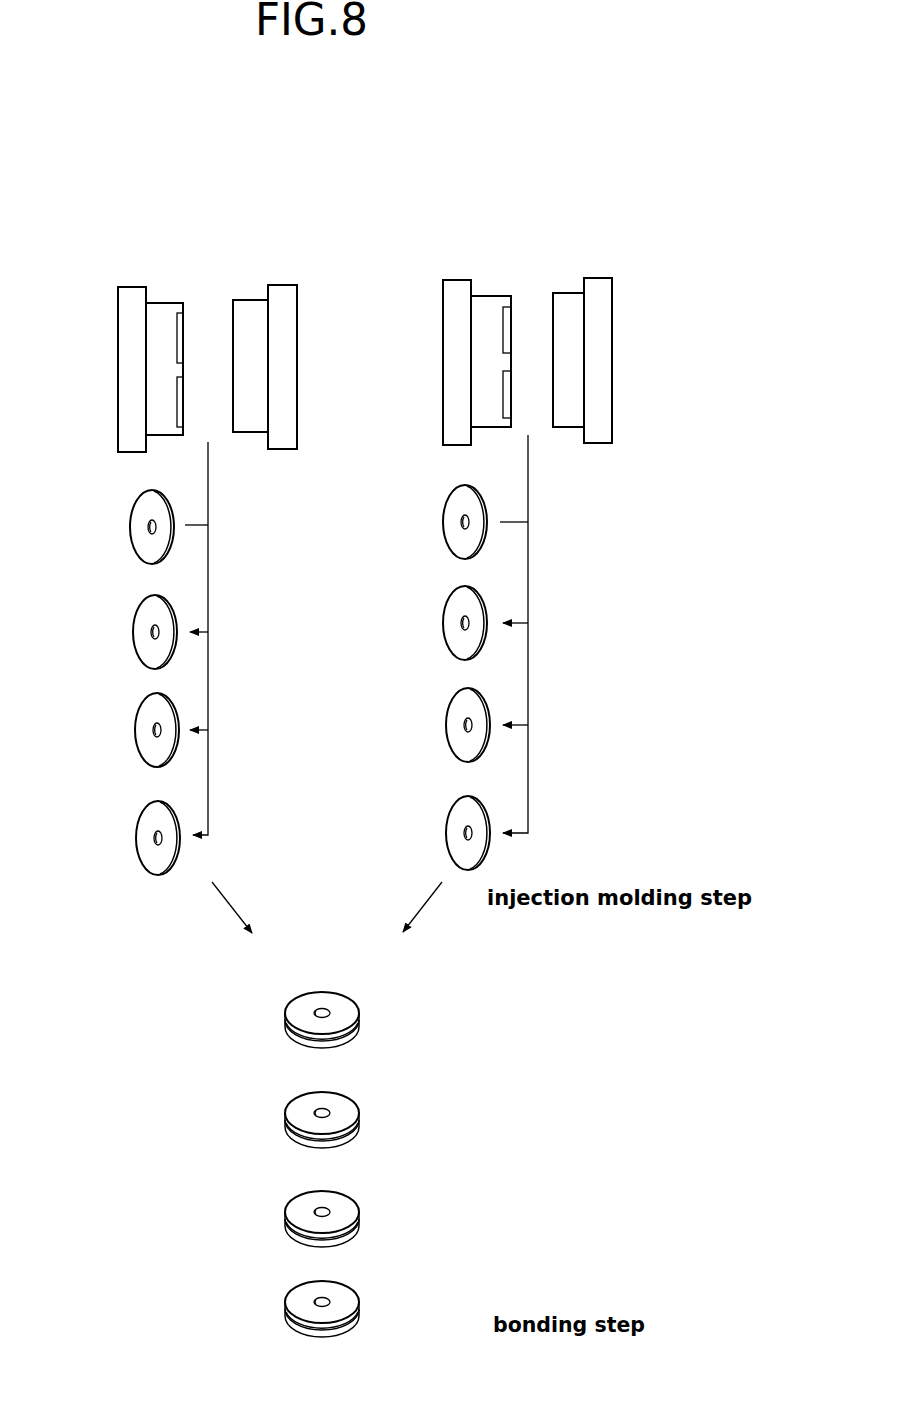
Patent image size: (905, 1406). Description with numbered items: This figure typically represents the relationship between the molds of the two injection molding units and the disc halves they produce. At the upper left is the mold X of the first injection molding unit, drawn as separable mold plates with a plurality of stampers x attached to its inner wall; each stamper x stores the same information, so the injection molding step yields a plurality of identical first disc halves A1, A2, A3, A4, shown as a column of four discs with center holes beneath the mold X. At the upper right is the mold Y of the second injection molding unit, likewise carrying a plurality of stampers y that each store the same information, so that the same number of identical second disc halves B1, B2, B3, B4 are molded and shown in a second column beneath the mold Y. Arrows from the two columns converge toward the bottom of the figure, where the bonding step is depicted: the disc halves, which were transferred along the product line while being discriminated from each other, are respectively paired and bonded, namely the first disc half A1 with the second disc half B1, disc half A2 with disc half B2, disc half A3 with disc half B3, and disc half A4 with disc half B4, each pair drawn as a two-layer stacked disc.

The mold X is at (228, 263).
The stampers x is at (185, 327).
The mold Y is at (570, 255).
The stampers y is at (512, 322).
The first disc half A1 is at (130, 529).
The first disc half A2 is at (133, 634).
The first disc half A3 is at (135, 732).
The first disc half A4 is at (136, 835).
The second disc half B1 is at (450, 521).
The second disc half B2 is at (452, 620).
The second disc half B3 is at (452, 724).
The second disc half B4 is at (455, 832).